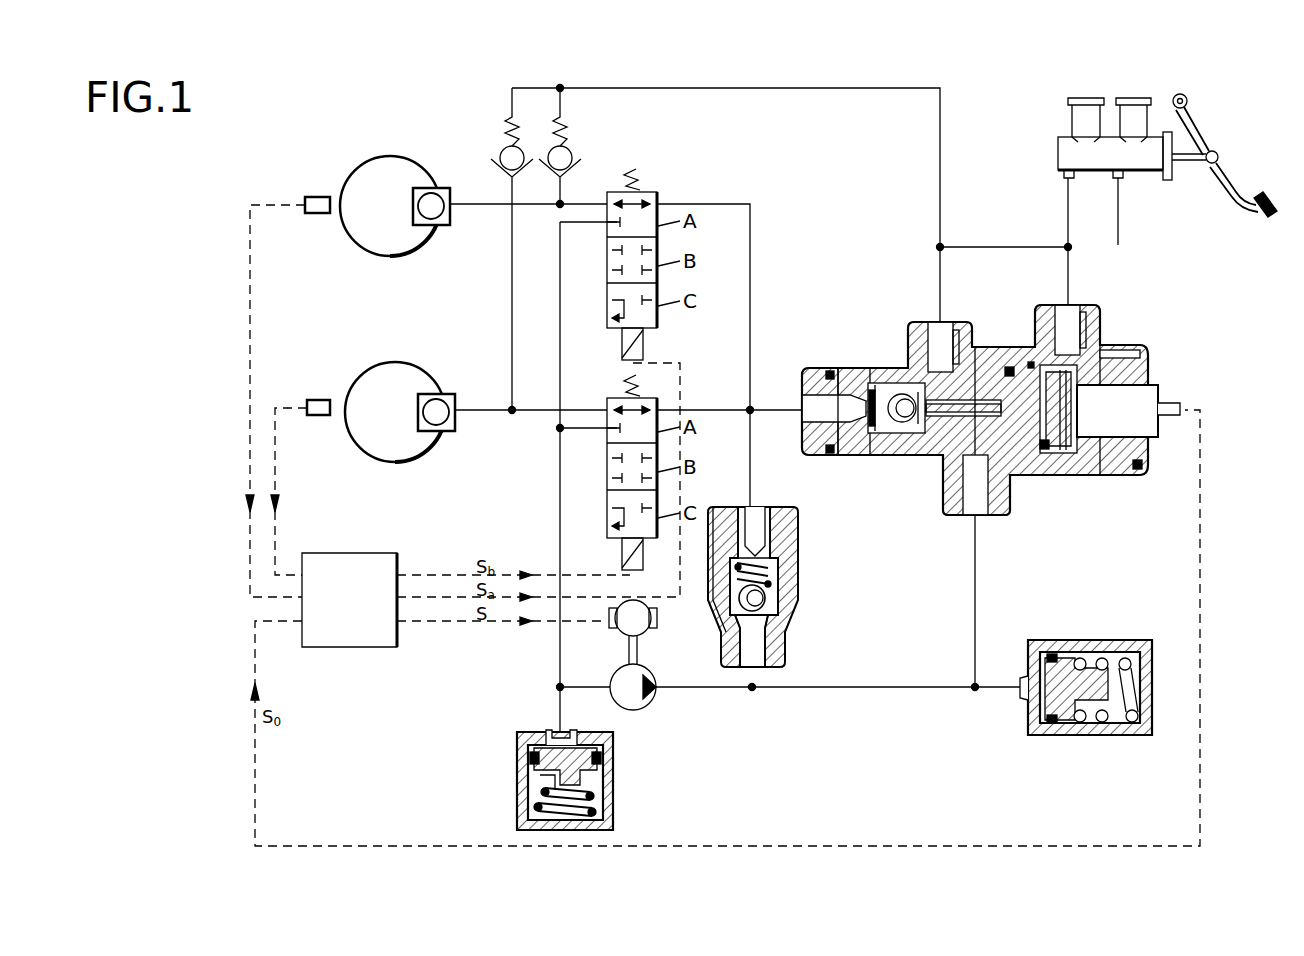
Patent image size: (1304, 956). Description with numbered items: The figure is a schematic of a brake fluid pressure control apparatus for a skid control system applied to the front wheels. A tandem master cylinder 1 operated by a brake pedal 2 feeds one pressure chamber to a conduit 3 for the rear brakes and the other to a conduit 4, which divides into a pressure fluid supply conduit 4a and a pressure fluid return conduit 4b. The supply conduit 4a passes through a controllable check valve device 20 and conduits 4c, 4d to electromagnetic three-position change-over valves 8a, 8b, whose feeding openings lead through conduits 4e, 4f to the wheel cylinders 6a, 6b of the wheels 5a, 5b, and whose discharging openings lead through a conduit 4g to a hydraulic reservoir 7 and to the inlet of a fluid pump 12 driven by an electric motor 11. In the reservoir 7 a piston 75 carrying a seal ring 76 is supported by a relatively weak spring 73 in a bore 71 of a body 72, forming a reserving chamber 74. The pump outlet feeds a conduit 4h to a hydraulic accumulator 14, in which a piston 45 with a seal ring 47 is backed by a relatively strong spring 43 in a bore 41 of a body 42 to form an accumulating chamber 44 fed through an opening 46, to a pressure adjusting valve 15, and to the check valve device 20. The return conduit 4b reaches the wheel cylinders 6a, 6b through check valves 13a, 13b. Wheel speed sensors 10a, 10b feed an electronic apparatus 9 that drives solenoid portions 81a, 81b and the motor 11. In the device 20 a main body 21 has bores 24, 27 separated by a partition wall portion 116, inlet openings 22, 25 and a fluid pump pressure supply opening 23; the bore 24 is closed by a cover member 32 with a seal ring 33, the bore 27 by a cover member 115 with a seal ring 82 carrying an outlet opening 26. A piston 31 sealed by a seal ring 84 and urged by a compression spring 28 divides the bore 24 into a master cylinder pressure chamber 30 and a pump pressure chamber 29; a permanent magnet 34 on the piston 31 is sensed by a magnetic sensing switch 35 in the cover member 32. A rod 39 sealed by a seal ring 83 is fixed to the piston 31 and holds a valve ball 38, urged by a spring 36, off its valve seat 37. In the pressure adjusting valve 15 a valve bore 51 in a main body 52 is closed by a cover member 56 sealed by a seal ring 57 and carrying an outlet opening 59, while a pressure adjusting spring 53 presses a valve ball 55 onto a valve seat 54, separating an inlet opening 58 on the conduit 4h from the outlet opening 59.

The tandem master cylinder 1 is at (1053, 92).
The brake pedal 2 is at (1242, 193).
The conduit 3 is at (1120, 225).
The conduit 4 is at (1070, 229).
The pressure fluid supply conduit 4a is at (1012, 247).
The pressure fluid return conduit 4b is at (941, 170).
The conduit 4c is at (752, 292).
The conduit 4d is at (680, 410).
The conduit 4e is at (527, 206).
The conduit 4f is at (527, 413).
The conduit 4g is at (558, 302).
The conduit 4h is at (872, 690).
The front wheel 5a is at (392, 156).
The front wheel 5b is at (397, 362).
The wheel cylinder 6a is at (432, 190).
The wheel cylinder 6b is at (437, 396).
The hydraulic reservoir 7 is at (550, 767).
The electromagnetic three-position change-over valve 8a is at (657, 190).
The electromagnetic three-position change-over valve 8b is at (657, 396).
The electronic apparatus 9 is at (350, 553).
The wheel speed sensor 10a is at (317, 197).
The wheel speed sensor 10b is at (319, 400).
The electric motor 11 is at (615, 608).
The fluid pump 12 is at (611, 676).
The check valve 13a is at (556, 132).
The check valve 13b is at (505, 132).
The hydraulic accumulator 14 is at (1066, 678).
The pressure adjusting valve 15 is at (777, 581).
The controllable check valve device 20 is at (976, 384).
The main body 21 is at (1003, 365).
The inlet opening 22 is at (1077, 348).
The fluid pump pressure supply opening 23 is at (970, 517).
The bore 24 is at (1040, 330).
The inlet opening 25 is at (932, 322).
The outlet opening 26 is at (806, 398).
The bore 27 is at (866, 366).
The compression spring 28 is at (1098, 477).
The pump pressure chamber 29 is at (982, 362).
The master cylinder pressure chamber 30 is at (1075, 375).
The piston 31 is at (1055, 478).
The cover member 32 is at (1138, 368).
The seal ring 33 is at (1122, 345).
The permanent magnet 34 is at (1136, 478).
The magnetic sensing switch 35 is at (1122, 410).
The spring 36 is at (870, 440).
The valve seat 37 is at (903, 423).
The valve ball 38 is at (893, 434).
The rod 39 is at (1065, 478).
The bore 41 is at (1086, 725).
The body 42 is at (1124, 732).
The spring 43 is at (1104, 657).
The accumulating chamber 44 is at (1033, 716).
The piston 45 is at (1078, 657).
The opening 46 is at (1025, 682).
The seal ring 47 is at (1055, 725).
The valve bore 51 is at (735, 614).
The main body 52 is at (780, 562).
The pressure adjusting spring 53 is at (780, 577).
The valve seat 54 is at (768, 606).
The valve ball 55 is at (732, 630).
The cover member 56 is at (733, 518).
The seal ring 57 is at (780, 532).
The inlet opening 58 is at (770, 667).
The outlet opening 59 is at (762, 512).
The bore 71 is at (604, 775).
The body 72 is at (604, 790).
The spring 73 is at (604, 808).
The reserving chamber 74 is at (550, 736).
The piston 75 is at (532, 786).
The seal ring 76 is at (530, 760).
The solenoid portion 81a is at (622, 345).
The solenoid portion 81b is at (622, 553).
The seal ring 82 is at (824, 373).
The seal ring 83 is at (962, 330).
The seal ring 84 is at (1011, 460).
The cover member 115 is at (808, 393).
The partition wall portion 116 is at (950, 473).